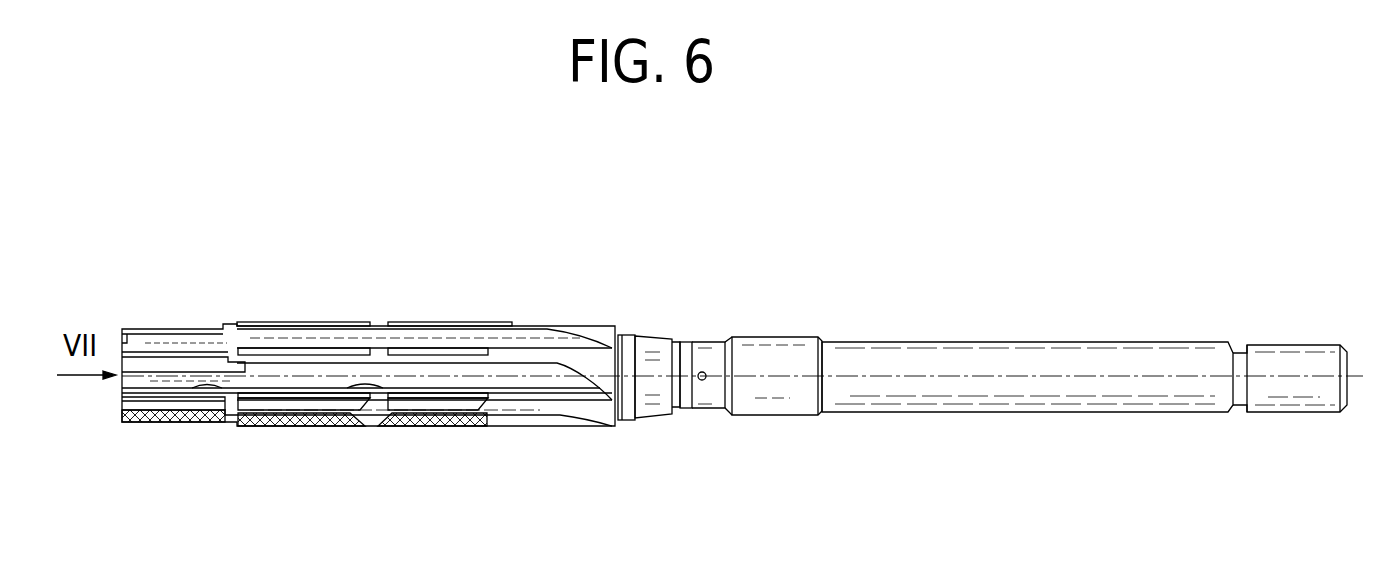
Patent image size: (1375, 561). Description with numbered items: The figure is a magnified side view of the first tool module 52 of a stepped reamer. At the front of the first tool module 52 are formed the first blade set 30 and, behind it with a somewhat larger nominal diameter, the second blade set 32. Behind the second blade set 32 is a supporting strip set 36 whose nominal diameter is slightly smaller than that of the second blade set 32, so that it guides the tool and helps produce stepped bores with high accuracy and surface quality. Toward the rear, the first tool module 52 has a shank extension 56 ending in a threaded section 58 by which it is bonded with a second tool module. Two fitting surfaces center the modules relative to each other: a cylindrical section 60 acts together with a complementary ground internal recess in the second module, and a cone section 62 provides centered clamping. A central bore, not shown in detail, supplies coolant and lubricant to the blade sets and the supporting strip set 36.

The first blade set 30 is at (185, 320).
The second blade set 32 is at (320, 320).
The supporting strip set 36 is at (422, 320).
The first tool module 52 is at (850, 430).
The shank extension 56 is at (898, 358).
The threaded section 58 is at (1280, 397).
The cylindrical section 60 is at (797, 350).
The cone section 62 is at (650, 348).